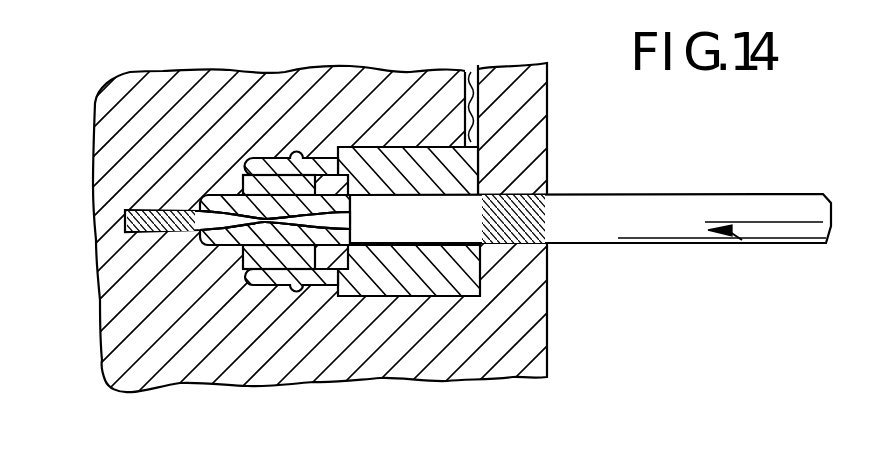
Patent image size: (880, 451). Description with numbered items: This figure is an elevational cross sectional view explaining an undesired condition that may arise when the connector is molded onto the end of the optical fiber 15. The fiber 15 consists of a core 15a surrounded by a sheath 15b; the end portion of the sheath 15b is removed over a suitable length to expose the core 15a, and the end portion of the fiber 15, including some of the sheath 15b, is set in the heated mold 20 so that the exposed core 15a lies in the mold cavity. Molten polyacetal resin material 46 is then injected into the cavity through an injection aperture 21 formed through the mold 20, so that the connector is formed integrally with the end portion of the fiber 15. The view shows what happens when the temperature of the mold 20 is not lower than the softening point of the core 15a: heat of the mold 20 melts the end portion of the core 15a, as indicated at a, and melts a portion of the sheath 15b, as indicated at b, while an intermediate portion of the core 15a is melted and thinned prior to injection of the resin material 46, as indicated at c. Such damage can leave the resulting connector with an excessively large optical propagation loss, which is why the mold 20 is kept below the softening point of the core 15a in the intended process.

The mold 20 is at (530, 138).
The injection aperture 21 is at (470, 70).
The resin material 46 is at (448, 280).
The optical fiber 15 is at (742, 240).
The sheath 15b is at (657, 236).
The core 15a is at (337, 223).
The melted end portion of the core a is at (140, 215).
The melted portion of the sheath b is at (527, 230).
The melted and thinned intermediate portion of the core c is at (240, 223).